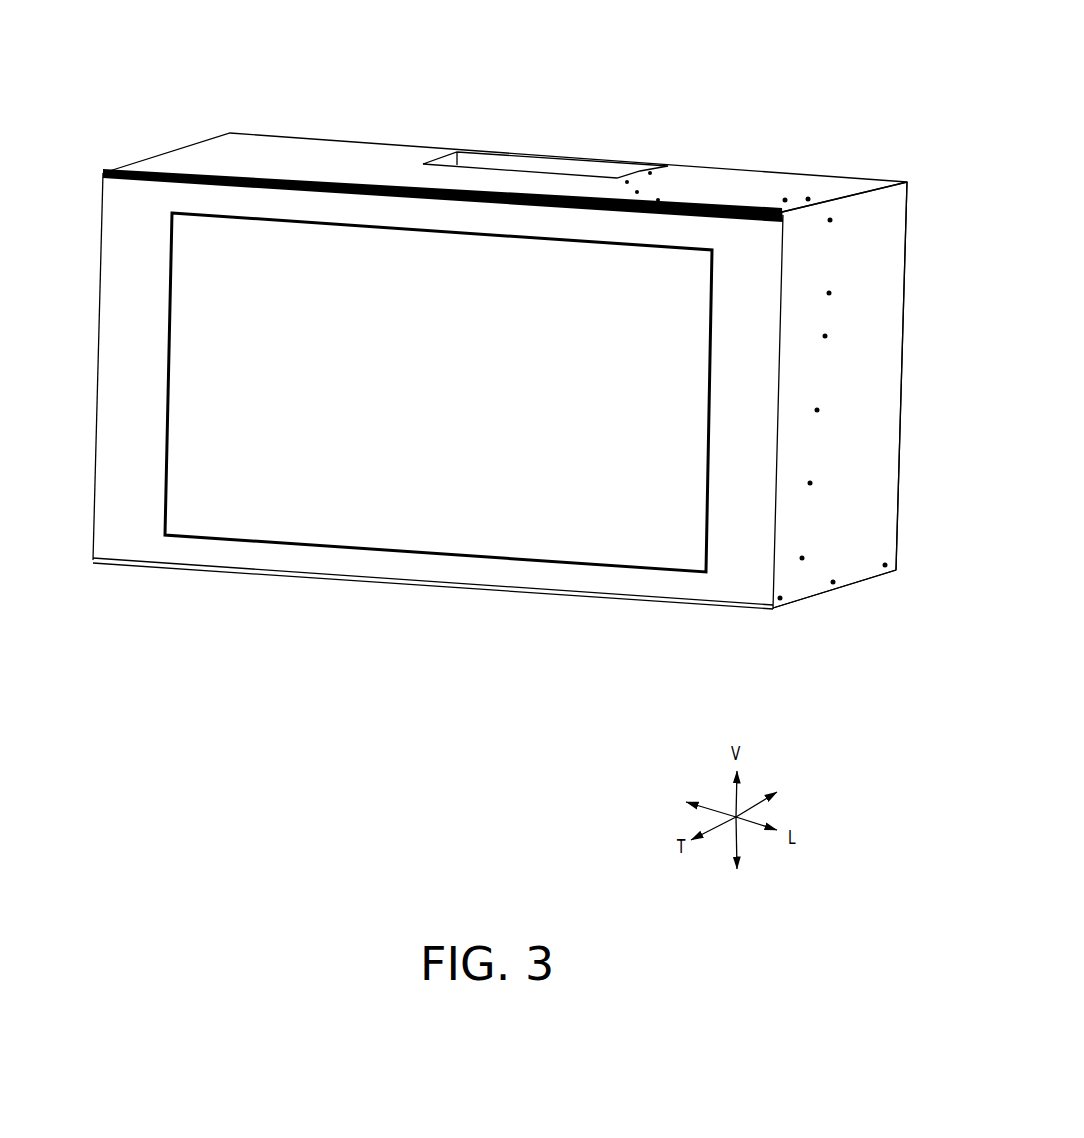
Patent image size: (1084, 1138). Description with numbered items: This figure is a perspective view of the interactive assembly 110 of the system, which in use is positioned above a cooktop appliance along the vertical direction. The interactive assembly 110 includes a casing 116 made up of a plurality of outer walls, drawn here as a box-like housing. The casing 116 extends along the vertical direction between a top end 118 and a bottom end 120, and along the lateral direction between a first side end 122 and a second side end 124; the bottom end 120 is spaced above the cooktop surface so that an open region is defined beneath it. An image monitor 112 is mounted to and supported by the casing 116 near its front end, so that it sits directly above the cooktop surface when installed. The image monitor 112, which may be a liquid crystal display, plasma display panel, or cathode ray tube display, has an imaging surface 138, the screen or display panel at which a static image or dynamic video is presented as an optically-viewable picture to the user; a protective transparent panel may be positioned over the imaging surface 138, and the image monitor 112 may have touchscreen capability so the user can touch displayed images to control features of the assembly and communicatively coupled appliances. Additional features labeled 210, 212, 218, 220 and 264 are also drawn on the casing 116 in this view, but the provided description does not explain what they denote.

The interactive assembly 110 is at (503, 347).
The image monitor 112 is at (684, 554).
The casing 116 is at (880, 358).
The top end 118 is at (823, 196).
The bottom end 120 is at (730, 613).
The first side end 122 is at (869, 518).
The second side end 124 is at (96, 405).
The imaging surface 138 is at (403, 519).
The attachment feature 210 is at (510, 119).
The lower corner 212 is at (92, 562).
The right attachment portion 218 is at (748, 206).
The left attachment portion 220 is at (225, 173).
The handle recess 264 is at (368, 185).